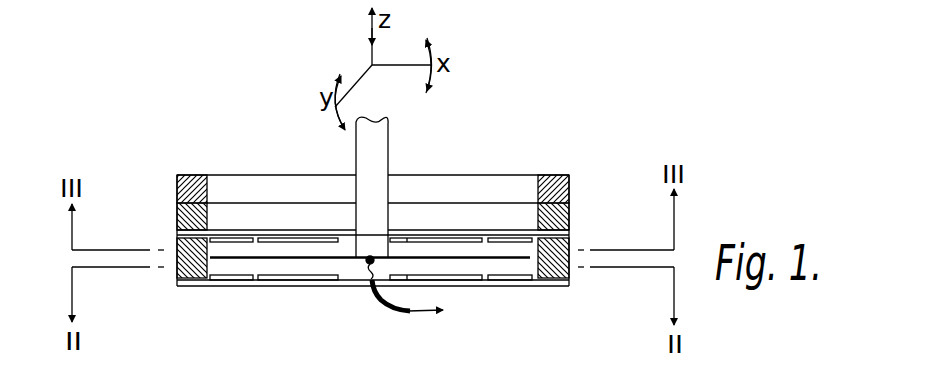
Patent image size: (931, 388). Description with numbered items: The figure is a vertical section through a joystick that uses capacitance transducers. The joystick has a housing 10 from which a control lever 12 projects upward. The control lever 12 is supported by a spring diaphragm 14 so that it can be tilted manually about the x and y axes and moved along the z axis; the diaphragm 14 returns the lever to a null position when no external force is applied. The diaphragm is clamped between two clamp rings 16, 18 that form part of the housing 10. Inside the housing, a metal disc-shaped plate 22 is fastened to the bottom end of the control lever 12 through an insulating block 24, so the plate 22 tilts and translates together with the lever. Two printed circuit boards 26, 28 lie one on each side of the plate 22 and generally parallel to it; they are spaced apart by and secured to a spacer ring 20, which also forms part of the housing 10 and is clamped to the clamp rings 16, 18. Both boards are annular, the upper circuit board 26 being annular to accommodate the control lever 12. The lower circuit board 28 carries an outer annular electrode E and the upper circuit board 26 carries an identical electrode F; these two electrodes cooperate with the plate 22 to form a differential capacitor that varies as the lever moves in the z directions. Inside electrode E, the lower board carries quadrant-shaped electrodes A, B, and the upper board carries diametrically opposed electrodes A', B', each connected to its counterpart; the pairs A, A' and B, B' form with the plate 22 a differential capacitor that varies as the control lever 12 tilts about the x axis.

The housing 10 is at (537, 146).
The control lever 12 is at (380, 152).
The spring diaphragm 14 is at (267, 203).
The clamp ring 16 is at (180, 189).
The clamp ring 18 is at (178, 220).
The spacer ring 20 is at (178, 273).
The metal disc-shaped plate 22 is at (296, 260).
The insulating block 24 is at (376, 248).
The upper printed circuit board 26 is at (219, 233).
The lower printed circuit board 28 is at (247, 288).
The quadrant-shaped electrode A is at (274, 305).
The quadrant-shaped electrode B is at (436, 305).
The outer annular electrode E is at (505, 279).
The outer annular electrode F is at (510, 240).
The quadrant-shaped electrode A' is at (436, 193).
The quadrant-shaped electrode B' is at (274, 191).